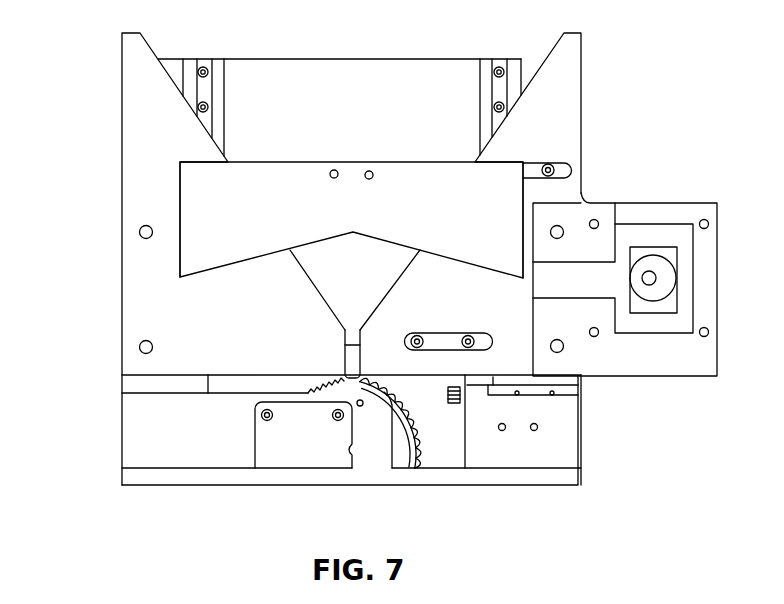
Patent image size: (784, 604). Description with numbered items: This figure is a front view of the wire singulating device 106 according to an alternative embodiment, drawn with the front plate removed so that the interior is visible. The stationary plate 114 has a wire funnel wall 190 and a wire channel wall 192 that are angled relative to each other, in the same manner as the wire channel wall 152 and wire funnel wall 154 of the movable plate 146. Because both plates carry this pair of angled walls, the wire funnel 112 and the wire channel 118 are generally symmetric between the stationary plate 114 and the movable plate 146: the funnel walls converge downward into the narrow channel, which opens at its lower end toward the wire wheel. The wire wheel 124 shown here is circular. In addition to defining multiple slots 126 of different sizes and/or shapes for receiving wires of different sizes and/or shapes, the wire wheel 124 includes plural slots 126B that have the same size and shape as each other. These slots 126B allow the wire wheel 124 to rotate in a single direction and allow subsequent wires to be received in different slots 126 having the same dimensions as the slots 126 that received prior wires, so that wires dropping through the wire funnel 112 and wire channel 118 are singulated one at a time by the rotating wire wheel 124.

The wire singulating device 106 is at (428, 30).
The wire funnel 112 is at (322, 266).
The stationary plate 114 is at (168, 288).
The wire channel 118 is at (333, 364).
The wire wheel 124 is at (403, 434).
The slots 126 is at (380, 400).
The slots 126B is at (352, 396).
The movable plate 146 is at (462, 284).
The wire channel wall 152 is at (360, 360).
The wire funnel wall 154 is at (394, 285).
The wire funnel wall 190 is at (312, 277).
The wire channel wall 192 is at (345, 350).